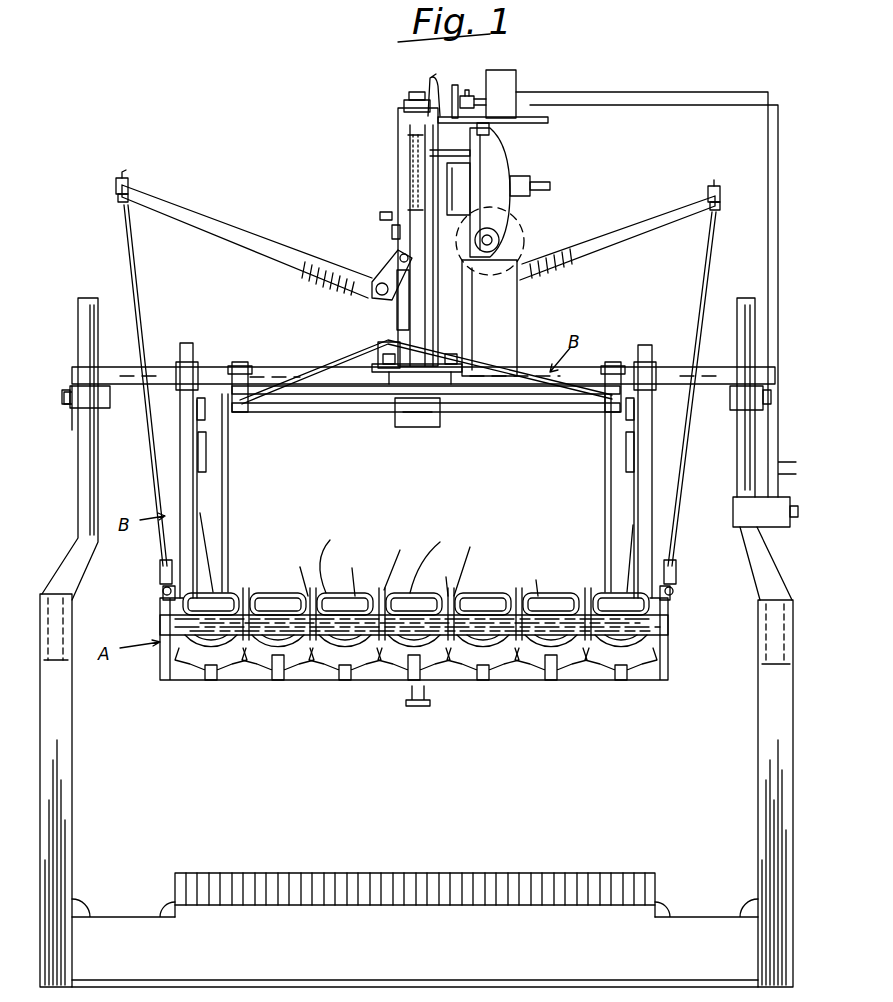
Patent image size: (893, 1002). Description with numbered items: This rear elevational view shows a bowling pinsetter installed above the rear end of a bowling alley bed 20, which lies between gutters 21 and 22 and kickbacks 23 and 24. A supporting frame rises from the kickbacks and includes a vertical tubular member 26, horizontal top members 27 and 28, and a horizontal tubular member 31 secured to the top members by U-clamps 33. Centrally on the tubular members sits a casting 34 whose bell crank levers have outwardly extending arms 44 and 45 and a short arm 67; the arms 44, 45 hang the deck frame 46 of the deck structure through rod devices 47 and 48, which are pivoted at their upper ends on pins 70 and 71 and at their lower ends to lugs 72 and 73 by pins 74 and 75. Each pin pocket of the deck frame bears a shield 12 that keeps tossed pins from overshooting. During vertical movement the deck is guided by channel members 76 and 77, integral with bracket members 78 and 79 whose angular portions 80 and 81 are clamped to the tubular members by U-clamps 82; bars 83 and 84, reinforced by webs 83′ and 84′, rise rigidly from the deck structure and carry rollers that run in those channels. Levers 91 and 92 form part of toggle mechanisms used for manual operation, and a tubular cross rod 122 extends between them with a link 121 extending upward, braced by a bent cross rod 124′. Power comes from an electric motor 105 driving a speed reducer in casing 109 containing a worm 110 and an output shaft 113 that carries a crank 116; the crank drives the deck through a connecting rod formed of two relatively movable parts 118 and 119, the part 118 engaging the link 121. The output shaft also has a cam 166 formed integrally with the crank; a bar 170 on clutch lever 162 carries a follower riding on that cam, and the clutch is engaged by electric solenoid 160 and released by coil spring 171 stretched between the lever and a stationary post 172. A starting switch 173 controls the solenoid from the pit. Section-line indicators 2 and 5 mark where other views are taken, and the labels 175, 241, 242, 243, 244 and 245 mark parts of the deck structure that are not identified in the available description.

The section line 2- 2 is at (455, 28).
The section line 5- 5 is at (419, 58).
The shield 12 is at (222, 592).
The bowling alley bed 20 is at (258, 873).
The gutter 21 is at (128, 917).
The gutter 22 is at (700, 917).
The kickback 23 is at (65, 800).
The kickback 24 is at (765, 790).
The vertical tubular member 26 is at (128, 478).
The horizontal top member 27 is at (90, 410).
The horizontal top member 28 is at (738, 420).
The horizontal tubular member 31 is at (262, 380).
The U-clamp 33 is at (118, 358).
The casting 34 is at (368, 348).
The outwardly extending arm 44 is at (225, 215).
The outwardly extending arm 45 is at (608, 212).
The deck frame 46 is at (397, 563).
The rod device 47 is at (138, 275).
The rod device 48 is at (690, 270).
The short arm 67 is at (372, 270).
The pin 70 is at (128, 172).
The pin 71 is at (716, 180).
The lug 72 is at (160, 600).
The lug 73 is at (672, 600).
The pin 74 is at (158, 575).
The pin 75 is at (676, 575).
The channel member 76 is at (197, 445).
The channel member 77 is at (636, 465).
The bracket member 78 is at (195, 406).
The bracket member 79 is at (640, 425).
The angular portion 80 is at (97, 398).
The angular portion 81 is at (690, 393).
The U-clamp 82 is at (176, 340).
The bar 83 is at (228, 468).
The web 83′ is at (208, 545).
The bar 84 is at (604, 488).
The web 84′ is at (625, 568).
The lever 91 is at (240, 360).
The lever 92 is at (612, 412).
The electric motor 105 is at (520, 232).
The casing 109 is at (505, 150).
The worm 110 is at (796, 470).
The output shaft 113 is at (540, 180).
The crank 116 is at (403, 125).
The connecting rod part 118 is at (397, 232).
The connecting rod part 119 is at (408, 165).
The link 121 is at (440, 400).
The tubular cross rod 122 is at (335, 412).
The bent cross rod 124′ is at (372, 356).
The electric solenoid 160 is at (516, 80).
The clutch lever 162 is at (474, 105).
The cam 166 is at (400, 235).
The bar 170 is at (462, 175).
The coil spring 171 is at (458, 90).
The stationary post 172 is at (426, 92).
The starting switch 173 is at (765, 528).
The tray bar 175 is at (668, 625).
The container wall 241 is at (398, 574).
The container flange 242 is at (434, 558).
The container flange 243 is at (294, 573).
The container rim 244 is at (332, 559).
The container partition 245 is at (507, 563).